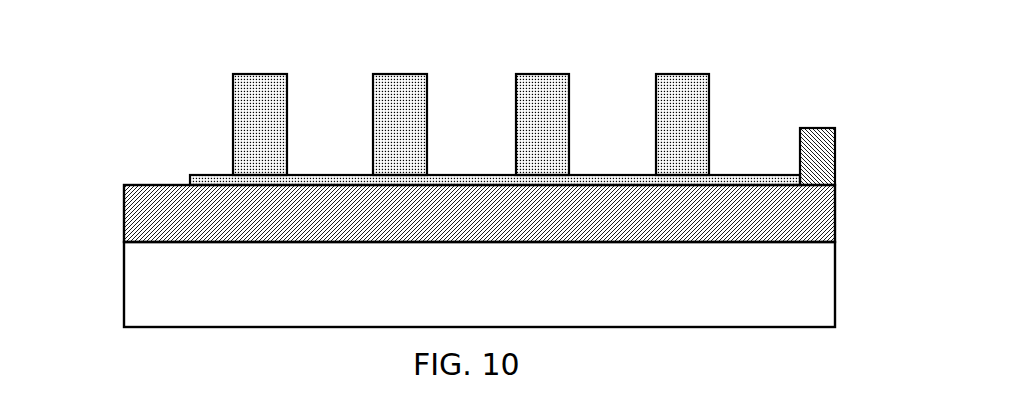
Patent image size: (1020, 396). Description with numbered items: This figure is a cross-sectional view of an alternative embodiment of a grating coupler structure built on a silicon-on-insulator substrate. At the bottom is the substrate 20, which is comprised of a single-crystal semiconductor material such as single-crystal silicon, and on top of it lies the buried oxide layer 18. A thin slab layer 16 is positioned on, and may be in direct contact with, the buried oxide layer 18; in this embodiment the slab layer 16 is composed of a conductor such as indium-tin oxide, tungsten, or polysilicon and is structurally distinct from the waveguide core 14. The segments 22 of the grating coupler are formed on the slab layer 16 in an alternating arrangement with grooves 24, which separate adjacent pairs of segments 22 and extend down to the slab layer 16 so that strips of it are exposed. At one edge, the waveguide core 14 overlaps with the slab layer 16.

The waveguide core 14 is at (818, 152).
The slab layer 16 is at (192, 175).
The buried oxide layer 18 is at (165, 212).
The substrate 20 is at (157, 310).
The segments 22 is at (260, 110).
The grooves 24 is at (285, 55).